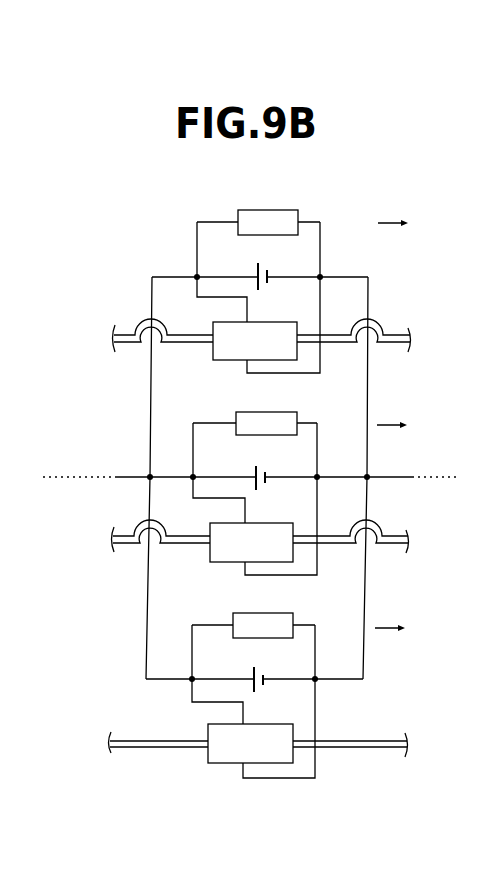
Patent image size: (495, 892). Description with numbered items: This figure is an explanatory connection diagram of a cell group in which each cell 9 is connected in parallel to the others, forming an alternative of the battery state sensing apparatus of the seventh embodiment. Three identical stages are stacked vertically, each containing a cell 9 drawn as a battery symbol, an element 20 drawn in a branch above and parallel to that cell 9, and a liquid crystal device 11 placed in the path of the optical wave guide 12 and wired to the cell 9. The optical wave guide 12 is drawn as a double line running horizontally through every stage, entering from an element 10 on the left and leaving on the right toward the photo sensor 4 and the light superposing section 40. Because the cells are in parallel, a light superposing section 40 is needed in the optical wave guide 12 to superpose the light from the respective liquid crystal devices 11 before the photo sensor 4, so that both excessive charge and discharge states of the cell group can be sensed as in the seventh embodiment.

The resistor 20 is at (268, 210).
The cell 9 is at (267, 270).
The liquid crystal device 11 is at (268, 322).
The optical wave guide 12 is at (175, 333).
The photo sensor 4 is at (417, 485).
The light superposing section 40 is at (431, 550).
The power source 10 is at (66, 539).